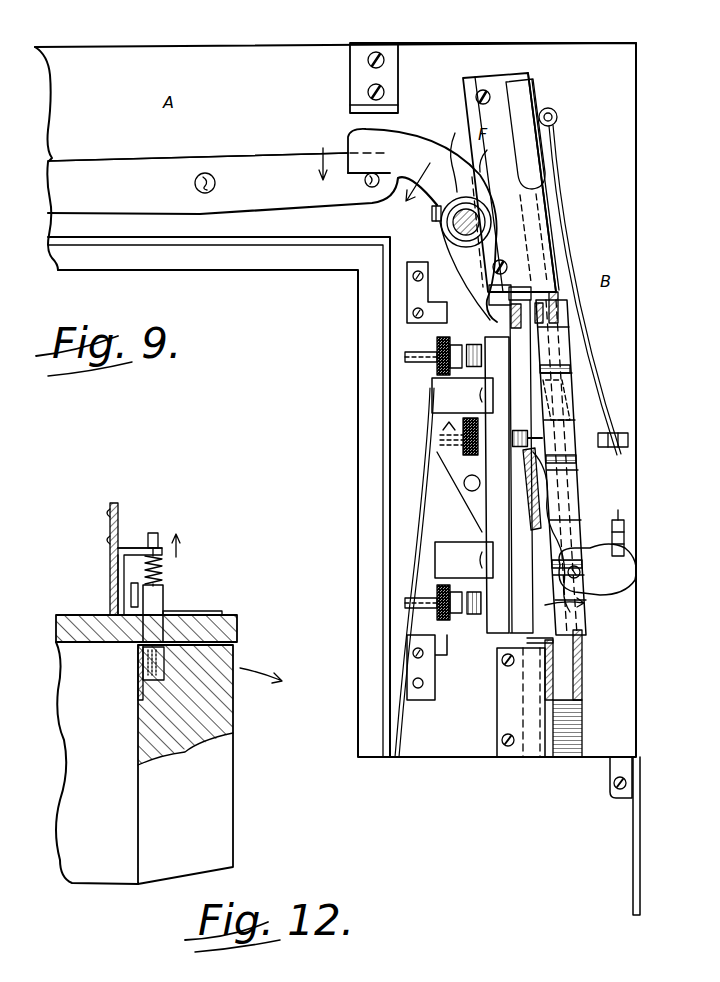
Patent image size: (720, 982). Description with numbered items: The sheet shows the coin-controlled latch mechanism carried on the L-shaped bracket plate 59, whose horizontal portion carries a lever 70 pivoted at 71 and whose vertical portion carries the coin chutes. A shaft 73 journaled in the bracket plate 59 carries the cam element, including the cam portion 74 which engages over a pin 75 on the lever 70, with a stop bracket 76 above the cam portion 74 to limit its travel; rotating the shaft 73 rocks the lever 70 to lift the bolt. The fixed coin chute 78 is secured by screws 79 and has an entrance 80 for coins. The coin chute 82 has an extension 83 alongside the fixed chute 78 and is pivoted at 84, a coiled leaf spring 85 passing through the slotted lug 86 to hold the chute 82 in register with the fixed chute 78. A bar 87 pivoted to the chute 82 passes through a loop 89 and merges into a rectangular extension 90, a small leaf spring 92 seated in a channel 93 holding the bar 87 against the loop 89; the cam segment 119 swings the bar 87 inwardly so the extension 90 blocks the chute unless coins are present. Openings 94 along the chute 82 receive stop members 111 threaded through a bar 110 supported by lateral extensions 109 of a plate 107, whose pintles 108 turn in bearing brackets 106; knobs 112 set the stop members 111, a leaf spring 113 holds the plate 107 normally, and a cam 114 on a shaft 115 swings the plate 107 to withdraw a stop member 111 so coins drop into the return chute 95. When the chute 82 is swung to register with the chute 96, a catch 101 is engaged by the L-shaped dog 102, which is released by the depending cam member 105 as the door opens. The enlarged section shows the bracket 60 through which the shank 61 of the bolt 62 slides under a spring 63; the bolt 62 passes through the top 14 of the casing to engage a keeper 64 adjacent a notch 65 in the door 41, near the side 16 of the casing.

In FIG. 9, the L-shaped bracket plate 59 is at (496, 52).
In FIG. 9, the stop bracket 76 is at (360, 102).
In FIG. 9, the pivot 71 is at (207, 172).
In FIG. 9, the lever 70 is at (263, 164).
In FIG. 12, the lever 70 is at (122, 582).
In FIG. 9, the cam portion 74 is at (405, 147).
In FIG. 9, the shaft 73 is at (458, 170).
In FIG. 9, the pin 75 is at (374, 188).
In FIG. 9, the cam segment 119 is at (448, 238).
In FIG. 9, the screws 79 is at (478, 92).
In FIG. 9, the fixed coin chute 78 is at (538, 98).
In FIG. 9, the entrance 80 is at (520, 135).
In FIG. 9, the pivot 84 is at (556, 112).
In FIG. 9, the coiled leaf spring 85 is at (575, 280).
In FIG. 9, the extension 83 is at (545, 222).
In FIG. 9, the rectangularly disposed extension 90 is at (528, 302).
In FIG. 9, the loop 89 is at (500, 295).
In FIG. 9, the bearing brackets 106 is at (414, 298).
In FIG. 9, the pintles 108 is at (440, 295).
In FIG. 9, the knobs 112 is at (447, 342).
In FIG. 9, the stop members 111 is at (474, 330).
In FIG. 9, the lateral extensions 109 is at (462, 478).
In FIG. 9, the plate 107 is at (430, 458).
In FIG. 9, the bar 87 is at (526, 402).
In FIG. 9, the bar 110 is at (478, 492).
In FIG. 9, the leaf spring 113 is at (430, 460).
In FIG. 9, the cam 114 is at (463, 463).
In FIG. 9, the shaft 115 is at (465, 490).
In FIG. 9, the openings 94 is at (556, 362).
In FIG. 9, the coin chute 82 is at (556, 400).
In FIG. 9, the lug 86 is at (626, 433).
In FIG. 9, the channel 93 is at (528, 520).
In FIG. 9, the small leaf spring 92 is at (540, 527).
In FIG. 9, the L-shaped dog 102 is at (618, 523).
In FIG. 9, the catch 101 is at (622, 572).
In FIG. 9, the return chute 95 is at (525, 686).
In FIG. 9, the chute 96 is at (570, 726).
In FIG. 9, the cam member 105 is at (642, 853).
In FIG. 12, the top 14 is at (224, 622).
In FIG. 12, the bracket 60 is at (135, 548).
In FIG. 12, the shank 61 is at (158, 534).
In FIG. 12, the spring 63 is at (165, 575).
In FIG. 12, the bolt 62 is at (158, 598).
In FIG. 12, the keeper 64 is at (142, 666).
In FIG. 12, the notch 65 is at (148, 685).
In FIG. 12, the door 41 is at (222, 702).
In FIG. 12, the side 16 is at (85, 706).